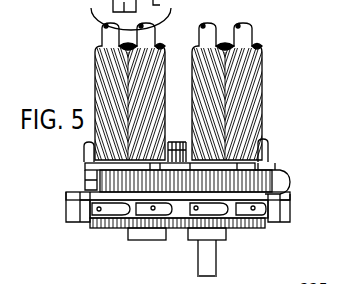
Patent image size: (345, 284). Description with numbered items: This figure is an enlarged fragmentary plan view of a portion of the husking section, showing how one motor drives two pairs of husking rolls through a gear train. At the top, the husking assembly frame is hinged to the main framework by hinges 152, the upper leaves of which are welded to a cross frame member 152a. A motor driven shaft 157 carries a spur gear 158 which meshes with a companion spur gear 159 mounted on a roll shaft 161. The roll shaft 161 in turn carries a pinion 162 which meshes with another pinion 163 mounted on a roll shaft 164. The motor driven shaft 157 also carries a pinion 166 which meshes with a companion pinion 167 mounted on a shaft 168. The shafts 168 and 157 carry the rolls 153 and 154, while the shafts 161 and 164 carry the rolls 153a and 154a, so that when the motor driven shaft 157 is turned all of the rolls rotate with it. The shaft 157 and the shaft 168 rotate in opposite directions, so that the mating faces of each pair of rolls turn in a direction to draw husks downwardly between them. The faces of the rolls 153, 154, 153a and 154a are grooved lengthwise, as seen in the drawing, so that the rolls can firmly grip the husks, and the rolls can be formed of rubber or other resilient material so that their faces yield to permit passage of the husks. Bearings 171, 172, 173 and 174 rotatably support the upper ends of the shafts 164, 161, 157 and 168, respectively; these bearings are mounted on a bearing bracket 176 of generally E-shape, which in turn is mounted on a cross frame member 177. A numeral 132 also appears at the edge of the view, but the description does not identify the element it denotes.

The hinges 152 is at (112, 8).
The cross frame member 152a is at (288, 0).
The roll 153 is at (258, 80).
The roll 153a is at (195, 26).
The roll 154 is at (196, 93).
The roll 154a is at (109, 72).
The motor driven shaft 157 is at (211, 266).
The spur gear 158 is at (192, 232).
The companion spur gear 159 is at (130, 228).
The roll shaft 161 is at (142, 36).
The pinion 162 is at (177, 140).
The pinion 163 is at (92, 168).
The roll shaft 164 is at (102, 33).
The pinion 166 is at (260, 135).
The companion pinion 167 is at (273, 184).
The shaft 168 is at (242, 35).
The bearing 171 is at (100, 220).
The bearing 172 is at (168, 232).
The bearing 173 is at (240, 215).
The bearing 174 is at (267, 217).
The bearing bracket 176 is at (88, 208).
The cross frame member 177 is at (85, 186).
The base 132 is at (344, 252).